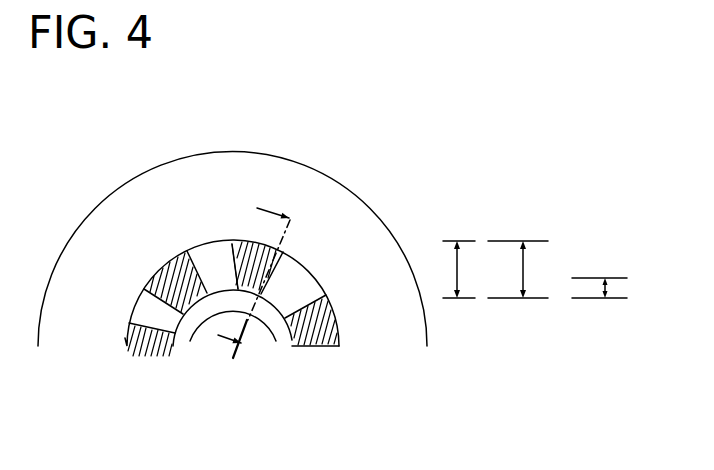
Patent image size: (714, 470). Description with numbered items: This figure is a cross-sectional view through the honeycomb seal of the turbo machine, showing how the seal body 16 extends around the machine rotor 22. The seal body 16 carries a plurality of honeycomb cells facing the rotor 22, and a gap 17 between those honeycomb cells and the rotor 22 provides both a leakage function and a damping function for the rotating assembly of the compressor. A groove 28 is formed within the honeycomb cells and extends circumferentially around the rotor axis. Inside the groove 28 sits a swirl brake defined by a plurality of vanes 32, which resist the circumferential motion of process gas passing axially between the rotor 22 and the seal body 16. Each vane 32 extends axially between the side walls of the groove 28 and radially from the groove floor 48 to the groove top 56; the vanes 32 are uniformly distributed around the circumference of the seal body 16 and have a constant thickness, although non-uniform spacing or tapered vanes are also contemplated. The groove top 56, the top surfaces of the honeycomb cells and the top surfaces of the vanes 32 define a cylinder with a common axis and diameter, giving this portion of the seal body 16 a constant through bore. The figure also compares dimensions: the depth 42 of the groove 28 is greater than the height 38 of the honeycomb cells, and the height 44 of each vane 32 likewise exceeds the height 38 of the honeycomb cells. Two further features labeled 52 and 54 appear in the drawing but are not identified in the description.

The seal body 16 is at (328, 195).
The gap 17 is at (292, 340).
The machine rotor 22 is at (220, 348).
The groove 28 is at (241, 272).
The vanes 32 is at (143, 310).
The height of honeycomb cells 38 is at (607, 288).
The depth of groove 42 is at (525, 272).
The height of vane 44 is at (456, 271).
The groove floor 48 is at (283, 252).
The side wall 52 is at (187, 251).
The slot 54 is at (232, 243).
The groove top 56 is at (175, 326).